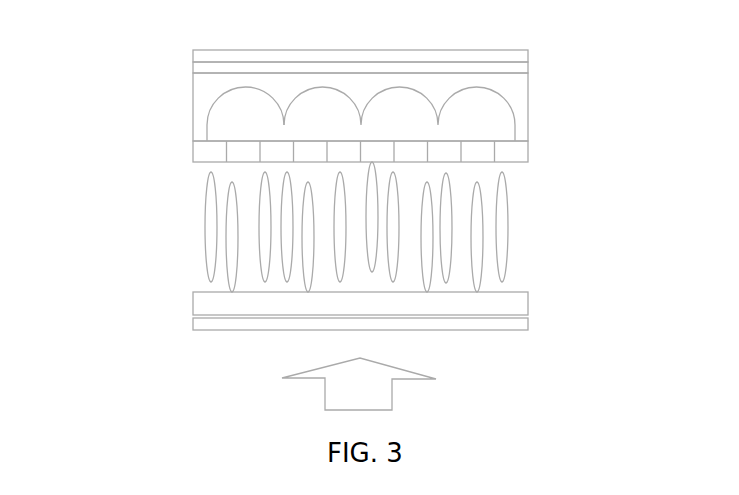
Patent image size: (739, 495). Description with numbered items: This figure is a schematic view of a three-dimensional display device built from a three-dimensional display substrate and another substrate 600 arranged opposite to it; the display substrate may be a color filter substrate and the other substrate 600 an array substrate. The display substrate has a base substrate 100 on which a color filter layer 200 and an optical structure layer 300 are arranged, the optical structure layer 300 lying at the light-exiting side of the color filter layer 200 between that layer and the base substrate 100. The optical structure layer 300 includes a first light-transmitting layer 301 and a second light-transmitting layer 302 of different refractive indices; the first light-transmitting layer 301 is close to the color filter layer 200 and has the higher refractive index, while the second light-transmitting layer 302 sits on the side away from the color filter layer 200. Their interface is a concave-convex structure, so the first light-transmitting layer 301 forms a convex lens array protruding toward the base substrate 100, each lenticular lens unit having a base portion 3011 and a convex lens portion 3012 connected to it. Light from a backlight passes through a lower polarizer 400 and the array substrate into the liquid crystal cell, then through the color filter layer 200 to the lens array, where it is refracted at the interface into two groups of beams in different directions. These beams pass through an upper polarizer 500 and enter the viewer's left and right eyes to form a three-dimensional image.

The upper polarizer 500 is at (515, 57).
The base substrate 100 is at (518, 70).
The optical structure layer 300 is at (365, 110).
The second light-transmitting layer 302 is at (520, 95).
The first light-transmitting layer 301 is at (332, 111).
The convex lens portion 3012 is at (232, 93).
The base portion 3011 is at (207, 133).
The color filter layer 200 is at (523, 152).
The another substrate 600 is at (518, 308).
The lower polarizer 400 is at (518, 320).